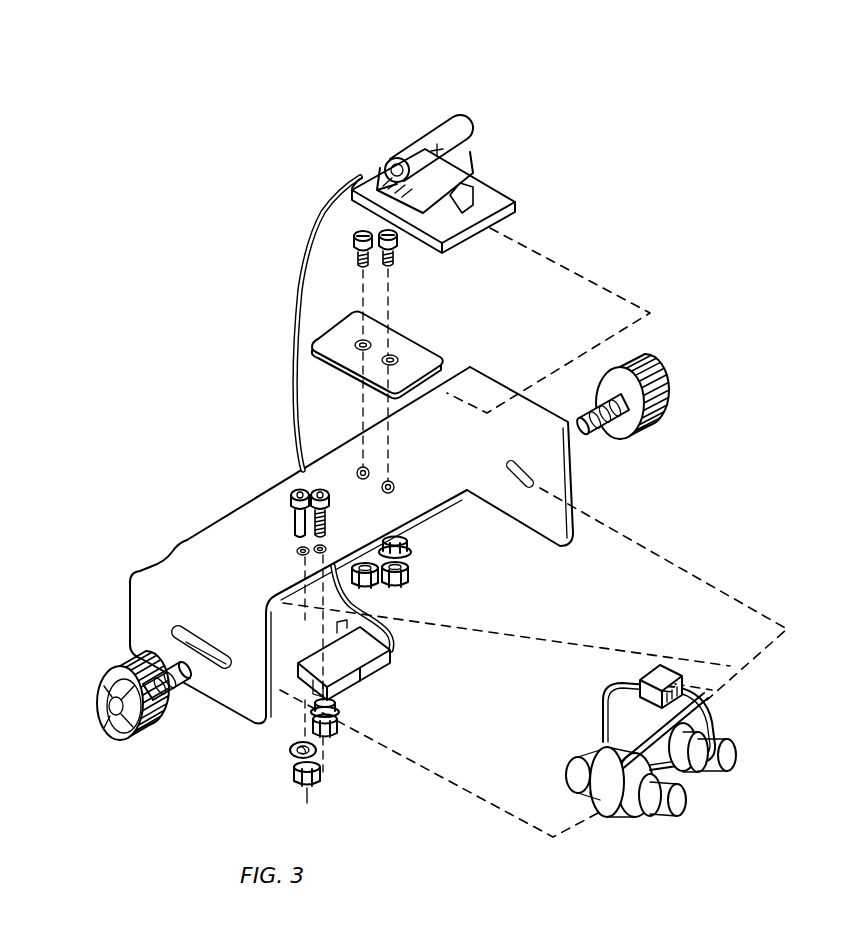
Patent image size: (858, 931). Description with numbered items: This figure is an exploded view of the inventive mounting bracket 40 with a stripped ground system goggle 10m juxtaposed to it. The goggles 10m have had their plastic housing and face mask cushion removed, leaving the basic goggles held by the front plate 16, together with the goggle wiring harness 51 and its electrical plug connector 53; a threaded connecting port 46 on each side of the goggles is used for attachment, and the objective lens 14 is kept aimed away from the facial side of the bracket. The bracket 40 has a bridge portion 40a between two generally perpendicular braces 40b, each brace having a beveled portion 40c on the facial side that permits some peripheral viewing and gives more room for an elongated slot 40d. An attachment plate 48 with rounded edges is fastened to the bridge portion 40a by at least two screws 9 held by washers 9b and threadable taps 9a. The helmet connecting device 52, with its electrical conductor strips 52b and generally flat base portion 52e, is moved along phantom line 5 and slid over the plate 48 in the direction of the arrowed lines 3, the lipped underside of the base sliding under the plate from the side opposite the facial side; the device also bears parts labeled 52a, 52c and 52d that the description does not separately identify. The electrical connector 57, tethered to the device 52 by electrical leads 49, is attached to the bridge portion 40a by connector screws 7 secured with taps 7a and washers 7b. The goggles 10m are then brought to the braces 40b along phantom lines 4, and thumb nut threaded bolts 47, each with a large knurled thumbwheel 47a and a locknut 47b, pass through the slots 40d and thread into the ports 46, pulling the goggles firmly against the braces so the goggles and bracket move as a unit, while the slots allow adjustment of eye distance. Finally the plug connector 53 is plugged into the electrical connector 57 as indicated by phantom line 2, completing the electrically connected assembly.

The phantom line 2 is at (528, 640).
The arrowed lines 3 is at (492, 172).
The phantom lines 4 is at (630, 545).
The phantom line 5 is at (578, 270).
The connector screws 7 is at (330, 507).
The taps 7a is at (340, 727).
The washers 7b is at (337, 707).
The screws 9 is at (398, 264).
The threadable taps 9a is at (413, 577).
The washers 9b is at (415, 545).
The stripped ground system goggles 10m is at (706, 709).
The goggle objective lens 14 is at (735, 757).
The front plate 16 is at (712, 712).
The mounting bracket 40 is at (236, 506).
The bridge portion 40a is at (273, 487).
The braces 40b is at (576, 480).
The beveled portion 40c is at (150, 539).
The elongated slot 40d is at (172, 630).
The threaded connecting port 46 is at (590, 797).
The thumb nut threaded bolts 47 is at (613, 440).
The knurled thumbwheel 47a is at (673, 408).
The locknut 47b is at (110, 727).
The attachment plate 48 is at (440, 350).
The electrical leads 49 is at (301, 288).
The wiring harness 51 is at (605, 695).
The helmet connecting device 52 is at (480, 150).
The sensor mount block 52a is at (407, 160).
The electrical conductor strips 52b is at (357, 212).
The sensor tab 52c is at (478, 132).
The sensor end cap 52d is at (383, 162).
The flat base portion 52e is at (515, 202).
The electrical plug connector 53 is at (680, 677).
The electrical connector 57 is at (393, 667).